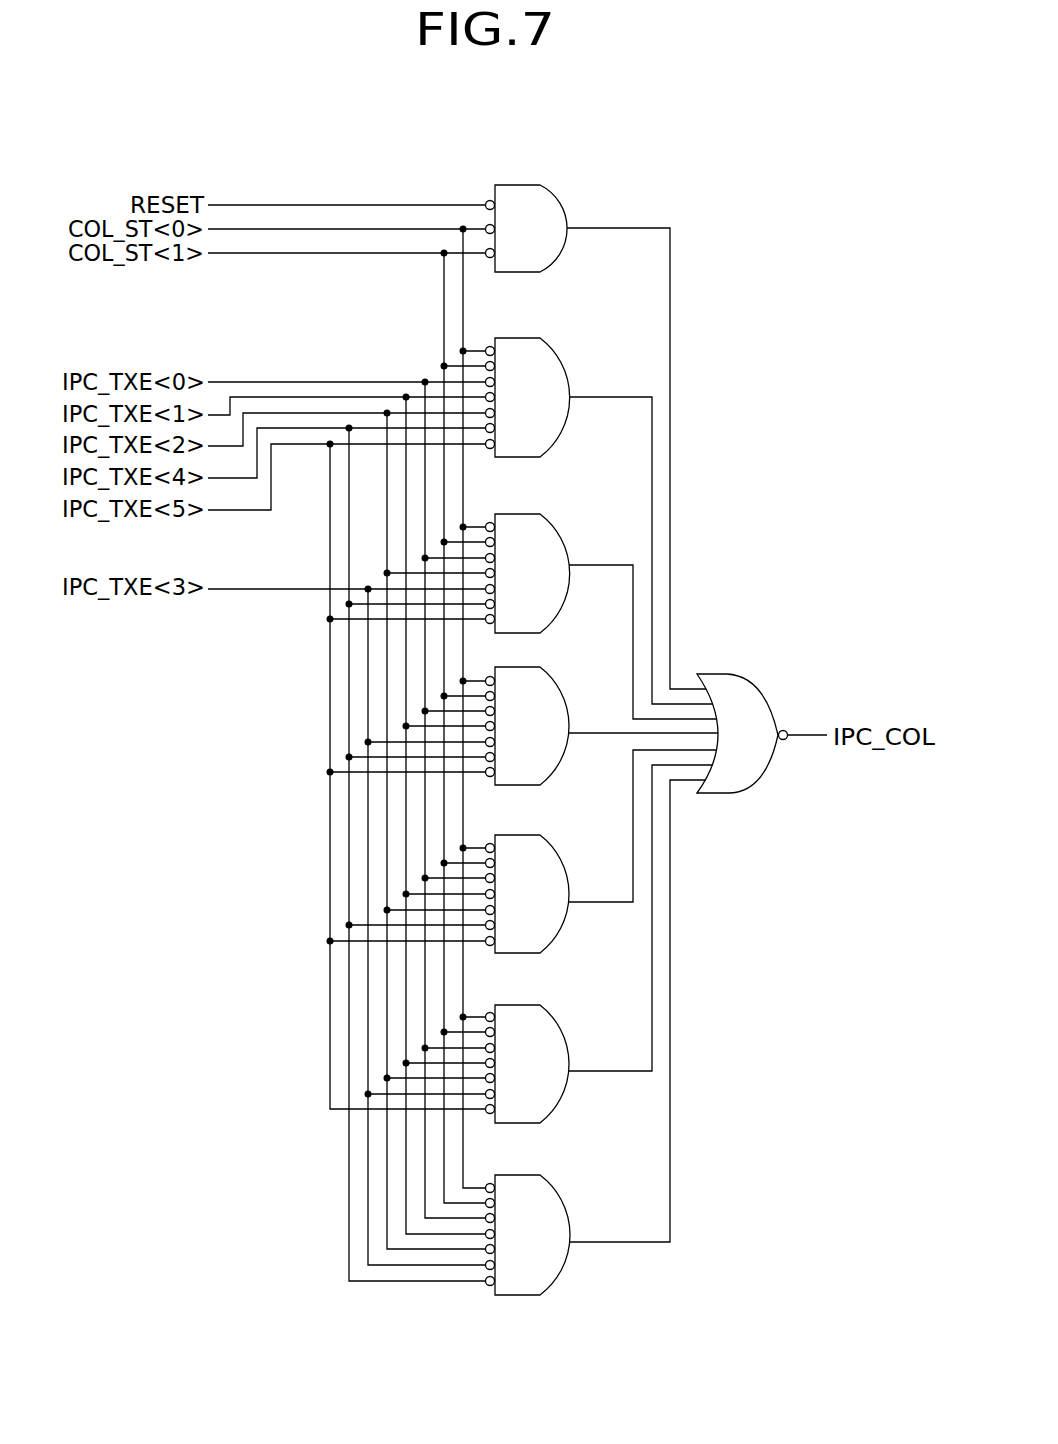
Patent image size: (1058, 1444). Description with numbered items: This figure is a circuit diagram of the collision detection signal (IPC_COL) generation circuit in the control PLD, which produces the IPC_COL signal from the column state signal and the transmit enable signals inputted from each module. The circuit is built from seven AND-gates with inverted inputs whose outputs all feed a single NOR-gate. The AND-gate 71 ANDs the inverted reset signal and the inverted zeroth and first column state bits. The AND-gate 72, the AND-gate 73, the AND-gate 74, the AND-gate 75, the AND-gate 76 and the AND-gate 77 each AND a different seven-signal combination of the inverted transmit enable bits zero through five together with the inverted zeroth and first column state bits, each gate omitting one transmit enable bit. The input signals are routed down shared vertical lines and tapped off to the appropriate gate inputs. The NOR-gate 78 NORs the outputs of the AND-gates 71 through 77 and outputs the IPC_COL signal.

The AND-gate 71 is at (563, 200).
The AND-gate 72 is at (563, 365).
The AND-gate 73 is at (563, 541).
The AND-gate 74 is at (563, 698).
The AND-gate 75 is at (563, 866).
The AND-gate 76 is at (563, 1034).
The AND-gate 77 is at (563, 1204).
The NOR-gate 78 is at (762, 698).